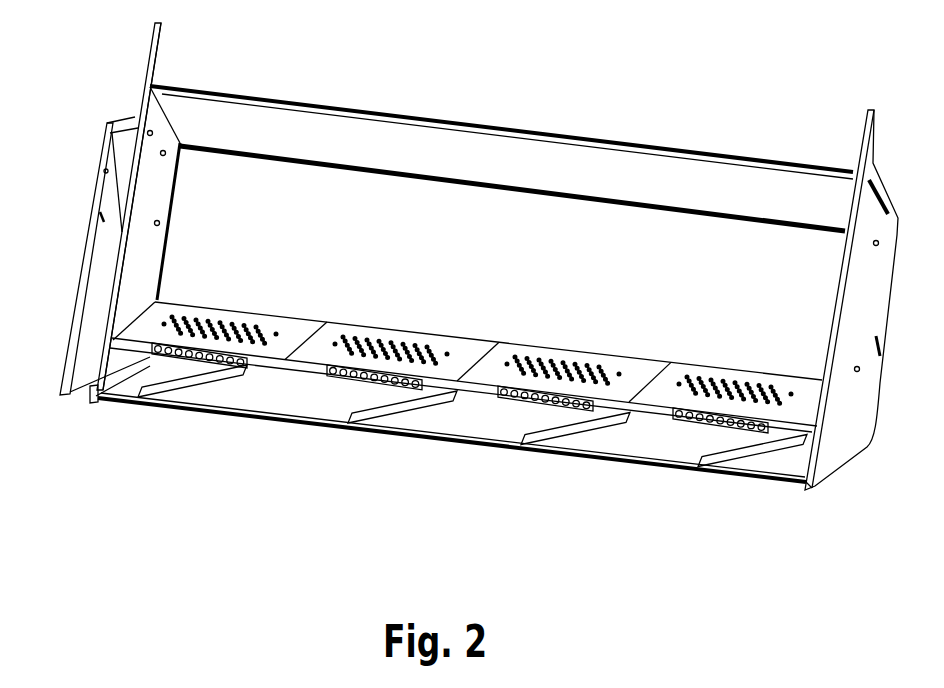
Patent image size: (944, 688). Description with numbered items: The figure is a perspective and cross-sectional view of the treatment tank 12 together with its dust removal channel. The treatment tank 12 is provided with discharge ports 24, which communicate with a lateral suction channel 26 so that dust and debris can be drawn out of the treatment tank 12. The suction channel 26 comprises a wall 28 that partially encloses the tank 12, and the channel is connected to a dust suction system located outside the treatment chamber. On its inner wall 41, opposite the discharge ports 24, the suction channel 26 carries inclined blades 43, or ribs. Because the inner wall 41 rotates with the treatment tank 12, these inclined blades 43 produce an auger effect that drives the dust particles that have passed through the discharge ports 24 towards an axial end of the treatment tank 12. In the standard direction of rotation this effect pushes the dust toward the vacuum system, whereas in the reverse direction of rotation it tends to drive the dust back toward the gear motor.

The treatment tank 12 is at (137, 110).
The discharge ports 24 is at (200, 317).
The lateral suction channel 26 is at (90, 358).
The wall 28 is at (218, 412).
The inner wall 41 is at (453, 423).
The inclined blades 43 is at (540, 428).